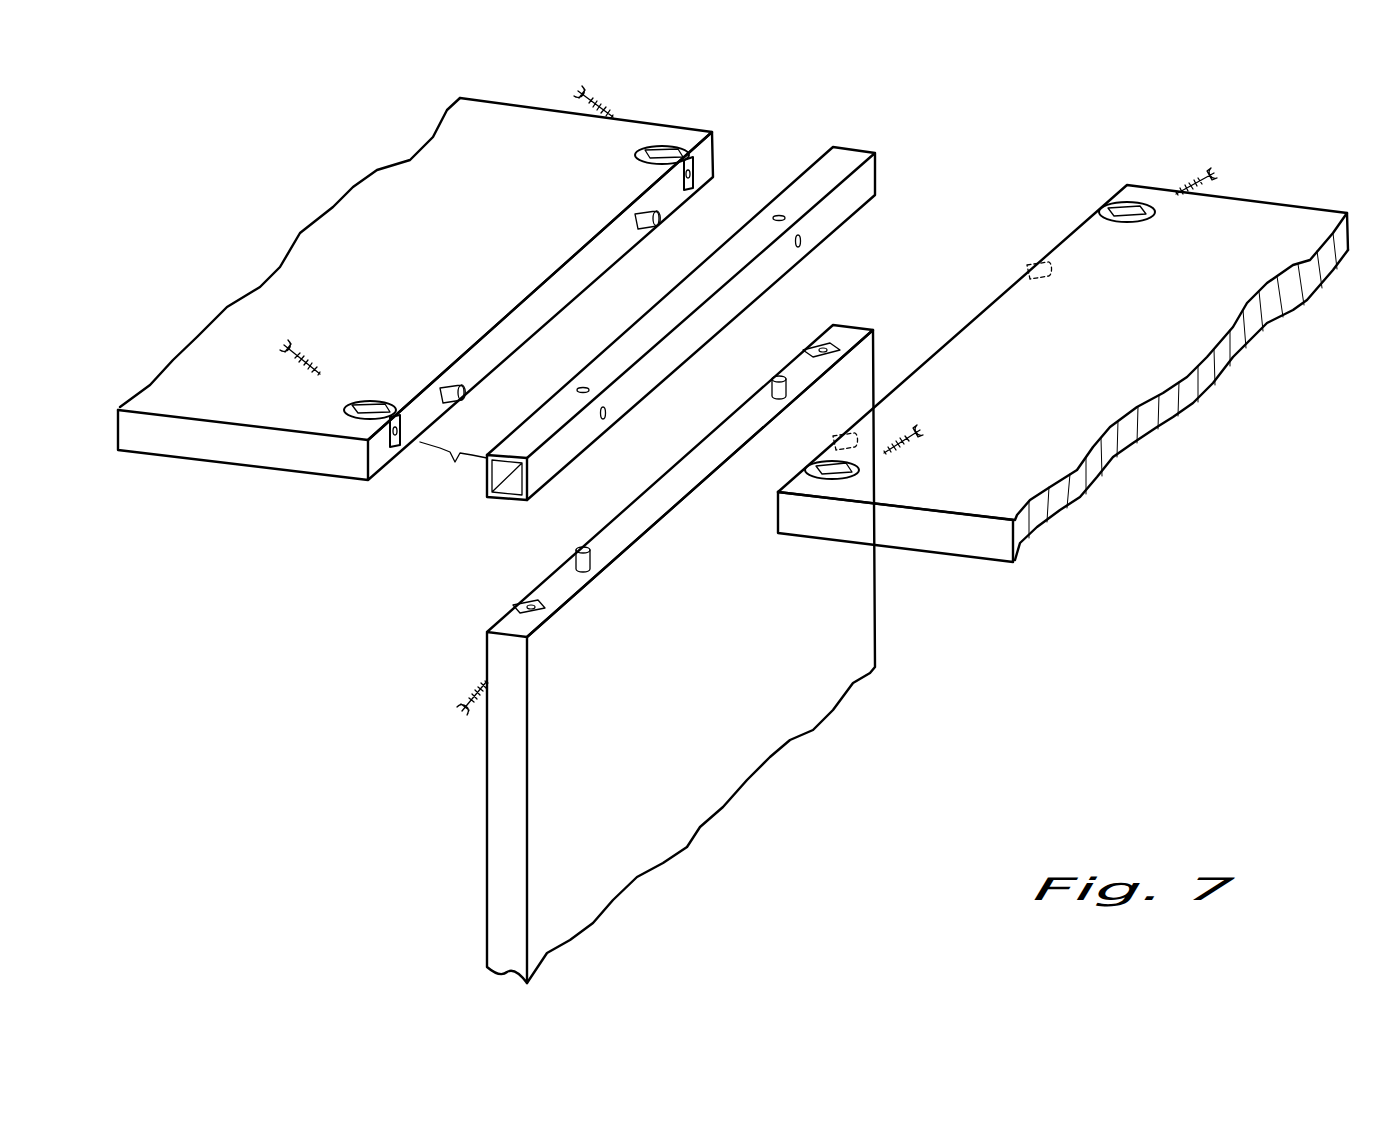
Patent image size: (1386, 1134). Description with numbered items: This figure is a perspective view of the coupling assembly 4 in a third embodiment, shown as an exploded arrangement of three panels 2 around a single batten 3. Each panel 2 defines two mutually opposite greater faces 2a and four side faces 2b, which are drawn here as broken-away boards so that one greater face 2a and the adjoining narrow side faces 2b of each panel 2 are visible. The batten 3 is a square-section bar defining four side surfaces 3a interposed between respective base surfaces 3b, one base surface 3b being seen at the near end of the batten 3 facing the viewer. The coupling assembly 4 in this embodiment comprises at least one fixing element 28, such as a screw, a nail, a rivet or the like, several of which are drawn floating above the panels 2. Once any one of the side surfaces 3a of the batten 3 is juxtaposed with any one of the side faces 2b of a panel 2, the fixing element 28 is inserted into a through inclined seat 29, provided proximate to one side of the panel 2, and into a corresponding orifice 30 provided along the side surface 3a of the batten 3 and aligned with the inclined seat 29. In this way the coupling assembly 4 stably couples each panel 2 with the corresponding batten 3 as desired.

The panel 2 is at (733, 524).
The greater face 2a is at (445, 190).
The side face 2b is at (703, 160).
The batten 3 is at (669, 343).
The side surface 3a is at (650, 333).
The base surface 3b is at (487, 478).
The coupling assembly 4 is at (799, 129).
The fixing element 28 is at (603, 103).
The inclined seat 29 is at (650, 160).
The orifice 30 is at (827, 175).